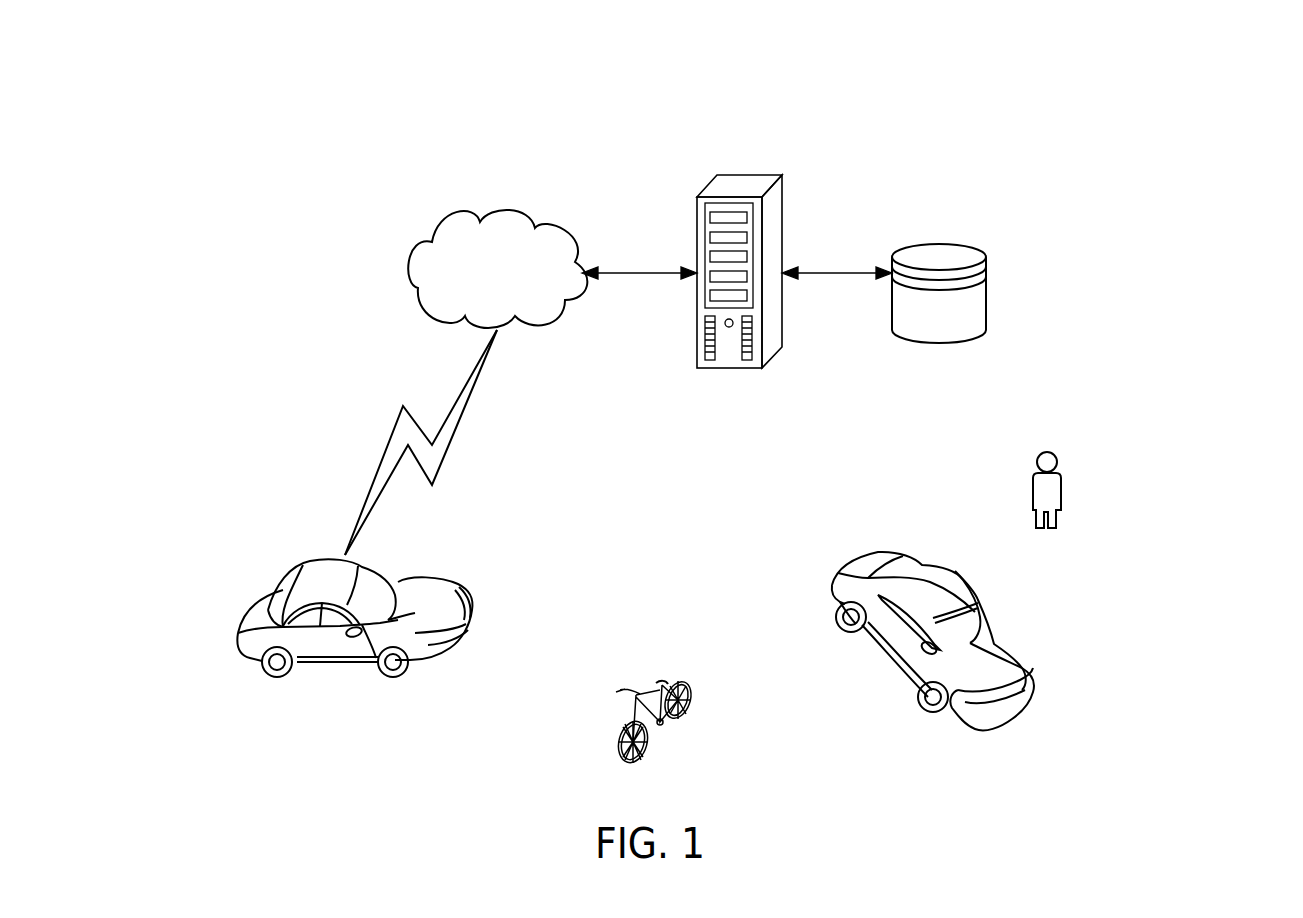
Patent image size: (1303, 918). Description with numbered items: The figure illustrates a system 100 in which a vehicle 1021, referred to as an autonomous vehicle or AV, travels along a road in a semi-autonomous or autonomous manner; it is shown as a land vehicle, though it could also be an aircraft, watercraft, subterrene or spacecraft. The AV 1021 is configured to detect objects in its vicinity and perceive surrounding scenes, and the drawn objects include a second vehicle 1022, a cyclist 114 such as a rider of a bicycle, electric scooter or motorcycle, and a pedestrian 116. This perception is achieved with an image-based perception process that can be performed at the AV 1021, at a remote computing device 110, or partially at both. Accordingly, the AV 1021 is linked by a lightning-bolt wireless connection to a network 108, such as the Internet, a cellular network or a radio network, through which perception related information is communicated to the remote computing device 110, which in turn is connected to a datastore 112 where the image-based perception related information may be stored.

The system 100 is at (246, 148).
The network 108 is at (442, 250).
The remote computing device 110 is at (736, 352).
The datastore 112 is at (947, 330).
The vehicle 1021 is at (360, 683).
The vehicle 1022 is at (1033, 690).
The cyclist 114 is at (693, 700).
The pedestrian 116 is at (1063, 490).